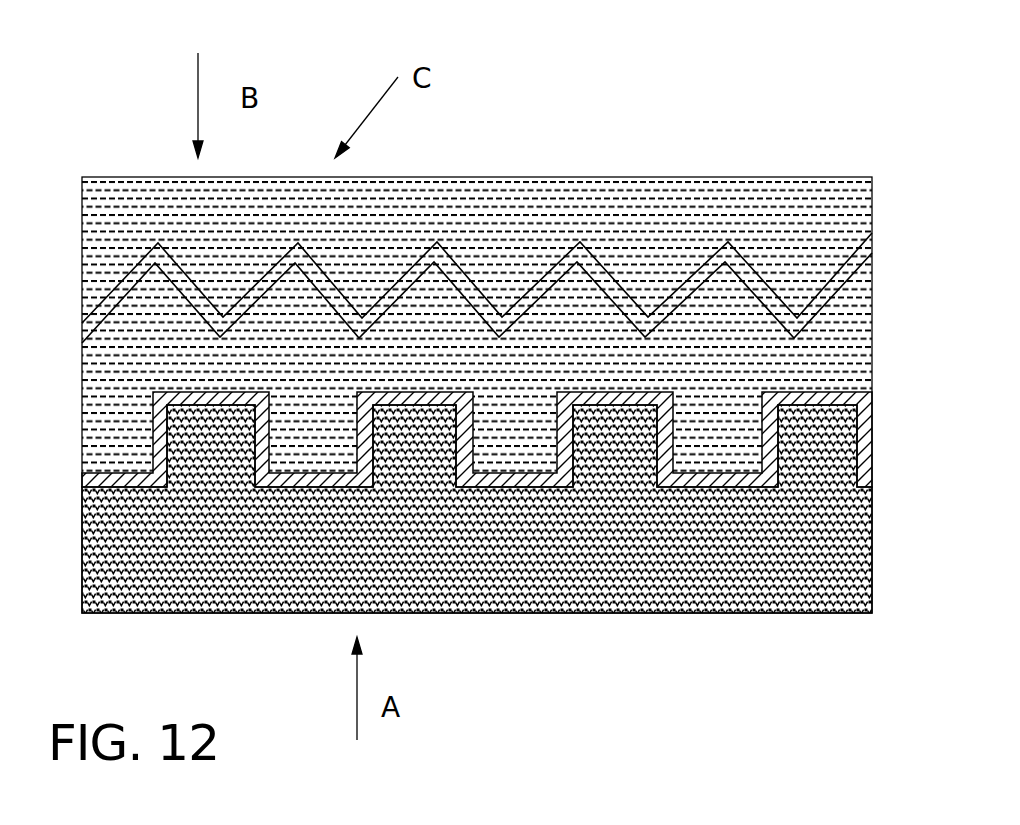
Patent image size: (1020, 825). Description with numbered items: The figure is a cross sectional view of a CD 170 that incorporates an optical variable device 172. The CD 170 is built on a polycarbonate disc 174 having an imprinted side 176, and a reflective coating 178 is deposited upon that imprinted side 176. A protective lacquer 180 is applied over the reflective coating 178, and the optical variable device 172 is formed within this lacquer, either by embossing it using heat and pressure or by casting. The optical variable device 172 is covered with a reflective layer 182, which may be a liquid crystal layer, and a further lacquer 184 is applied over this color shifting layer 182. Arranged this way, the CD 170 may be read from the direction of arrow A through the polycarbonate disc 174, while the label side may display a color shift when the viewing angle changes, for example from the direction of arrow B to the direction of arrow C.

The CD 170 is at (717, 158).
The optical variable device 172 is at (488, 297).
The polycarbonate disc 174 is at (426, 562).
The imprinted side 176 is at (848, 455).
The reflective coating 178 is at (860, 487).
The protective lacquer 180 is at (454, 372).
The reflective layer 182 is at (777, 292).
The lacquer 184 is at (390, 242).